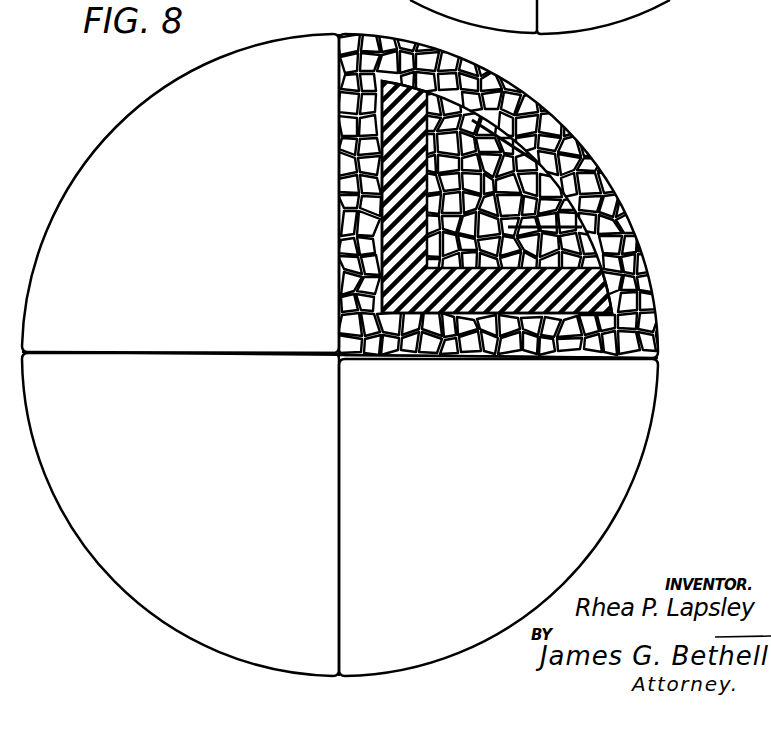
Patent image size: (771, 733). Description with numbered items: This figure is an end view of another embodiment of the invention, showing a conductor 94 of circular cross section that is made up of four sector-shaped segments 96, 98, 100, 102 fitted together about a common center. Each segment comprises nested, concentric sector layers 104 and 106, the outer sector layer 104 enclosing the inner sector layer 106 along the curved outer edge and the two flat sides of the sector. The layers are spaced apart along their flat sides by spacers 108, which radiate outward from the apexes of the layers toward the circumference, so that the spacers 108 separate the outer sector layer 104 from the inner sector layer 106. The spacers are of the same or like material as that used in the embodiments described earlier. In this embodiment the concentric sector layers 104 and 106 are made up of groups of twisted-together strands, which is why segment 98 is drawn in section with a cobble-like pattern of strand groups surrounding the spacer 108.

The conductor 94 is at (356, 10).
The segment 96 is at (174, 81).
The segment 98 is at (593, 170).
The segment 100 is at (656, 431).
The segment 102 is at (68, 521).
The sector layer 104 is at (350, 150).
The sector layer 106 is at (347, 192).
The spacer 108 is at (392, 236).